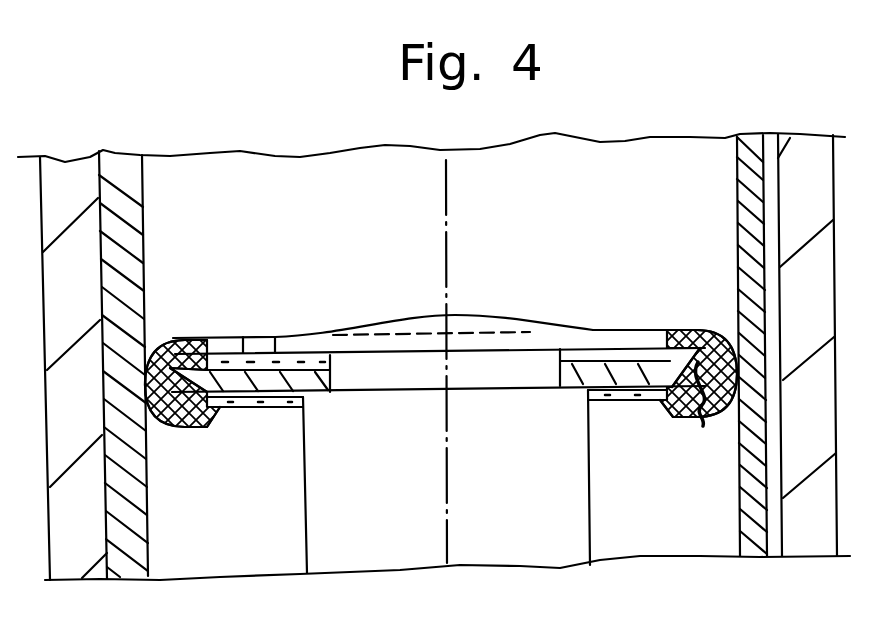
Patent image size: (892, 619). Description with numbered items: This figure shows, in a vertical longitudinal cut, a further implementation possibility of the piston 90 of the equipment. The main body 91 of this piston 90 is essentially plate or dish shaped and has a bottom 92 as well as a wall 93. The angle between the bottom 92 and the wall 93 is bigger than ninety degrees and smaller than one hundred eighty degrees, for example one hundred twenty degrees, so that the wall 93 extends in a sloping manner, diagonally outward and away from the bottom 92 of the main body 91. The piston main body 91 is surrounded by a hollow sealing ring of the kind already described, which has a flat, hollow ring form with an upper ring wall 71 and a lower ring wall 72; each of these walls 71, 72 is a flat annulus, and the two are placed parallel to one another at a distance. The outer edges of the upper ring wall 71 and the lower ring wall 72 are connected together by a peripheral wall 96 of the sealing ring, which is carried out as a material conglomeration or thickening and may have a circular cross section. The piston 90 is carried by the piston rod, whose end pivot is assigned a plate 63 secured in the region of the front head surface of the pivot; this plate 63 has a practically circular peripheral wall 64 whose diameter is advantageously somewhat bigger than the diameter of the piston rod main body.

The plate 63 is at (488, 316).
The peripheral wall 64 is at (243, 337).
The upper ring wall 71 is at (629, 330).
The lower ring wall 72 is at (610, 408).
The piston 90 is at (182, 338).
The main body of the piston 91 is at (363, 370).
The bottom 92 is at (648, 378).
The wall 93 is at (703, 420).
The peripheral wall 96 is at (689, 326).